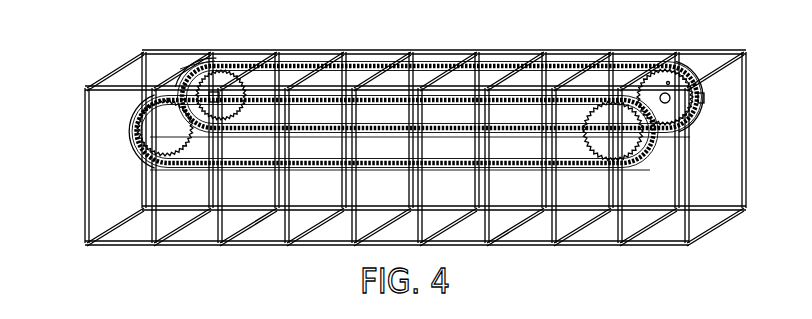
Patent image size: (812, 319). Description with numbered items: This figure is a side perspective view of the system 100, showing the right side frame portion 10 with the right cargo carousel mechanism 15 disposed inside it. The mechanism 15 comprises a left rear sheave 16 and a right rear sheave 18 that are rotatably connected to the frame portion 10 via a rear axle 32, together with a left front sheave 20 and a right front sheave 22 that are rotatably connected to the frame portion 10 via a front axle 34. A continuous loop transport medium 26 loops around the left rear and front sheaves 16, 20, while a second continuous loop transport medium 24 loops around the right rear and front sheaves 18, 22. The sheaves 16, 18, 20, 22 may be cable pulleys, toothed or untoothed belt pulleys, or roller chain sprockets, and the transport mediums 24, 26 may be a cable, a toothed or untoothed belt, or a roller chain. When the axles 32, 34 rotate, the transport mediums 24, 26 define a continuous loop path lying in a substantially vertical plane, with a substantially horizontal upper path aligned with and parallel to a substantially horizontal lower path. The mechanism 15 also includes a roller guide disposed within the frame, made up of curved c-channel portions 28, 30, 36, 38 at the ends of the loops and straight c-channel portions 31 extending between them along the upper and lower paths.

The system 100 is at (554, 33).
The right side frame portion 10 is at (700, 53).
The right cargo carousel mechanism 15 is at (307, 40).
The left rear sheave 16 is at (167, 127).
The right rear sheave 18 is at (221, 78).
The left front sheave 20 is at (610, 143).
The right front sheave 22 is at (692, 78).
The continuous loop transport medium 24 is at (362, 66).
The continuous loop transport medium 26 is at (453, 100).
The curved c-channel portion 28 is at (137, 160).
The curved c-channel portion 30 is at (213, 96).
The straight c-channel portions 31 is at (422, 62).
The rear axle 32 is at (180, 69).
The front axle 34 is at (672, 100).
The curved c-channel portion 36 is at (668, 83).
The curved c-channel portion 38 is at (652, 125).